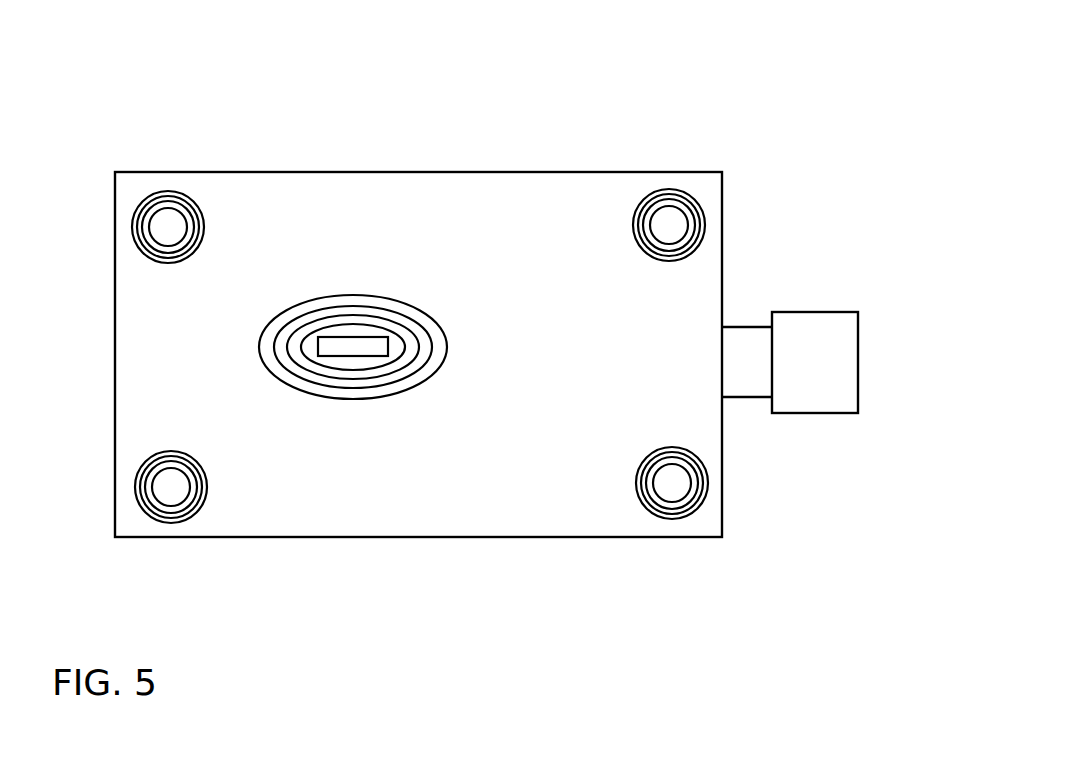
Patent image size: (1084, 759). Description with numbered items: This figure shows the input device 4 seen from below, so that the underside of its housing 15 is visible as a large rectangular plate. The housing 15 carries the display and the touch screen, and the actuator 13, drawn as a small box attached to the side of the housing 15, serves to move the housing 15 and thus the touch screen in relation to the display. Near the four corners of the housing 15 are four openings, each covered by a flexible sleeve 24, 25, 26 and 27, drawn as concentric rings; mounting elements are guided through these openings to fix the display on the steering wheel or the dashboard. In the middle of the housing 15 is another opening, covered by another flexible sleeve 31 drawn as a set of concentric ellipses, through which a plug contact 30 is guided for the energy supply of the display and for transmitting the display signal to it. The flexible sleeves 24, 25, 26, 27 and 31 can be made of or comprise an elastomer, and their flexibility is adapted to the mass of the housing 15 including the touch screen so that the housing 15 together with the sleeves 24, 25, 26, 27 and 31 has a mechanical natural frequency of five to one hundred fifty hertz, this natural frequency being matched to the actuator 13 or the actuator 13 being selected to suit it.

The input device 4 is at (795, 130).
The actuator 13 is at (807, 335).
The housing 15 is at (495, 210).
The flexible sleeve 24 is at (650, 203).
The flexible sleeve 25 is at (677, 510).
The flexible sleeve 26 is at (166, 199).
The flexible sleeve 27 is at (181, 515).
The plug contact 30 is at (328, 343).
The flexible sleeve 31 is at (377, 301).